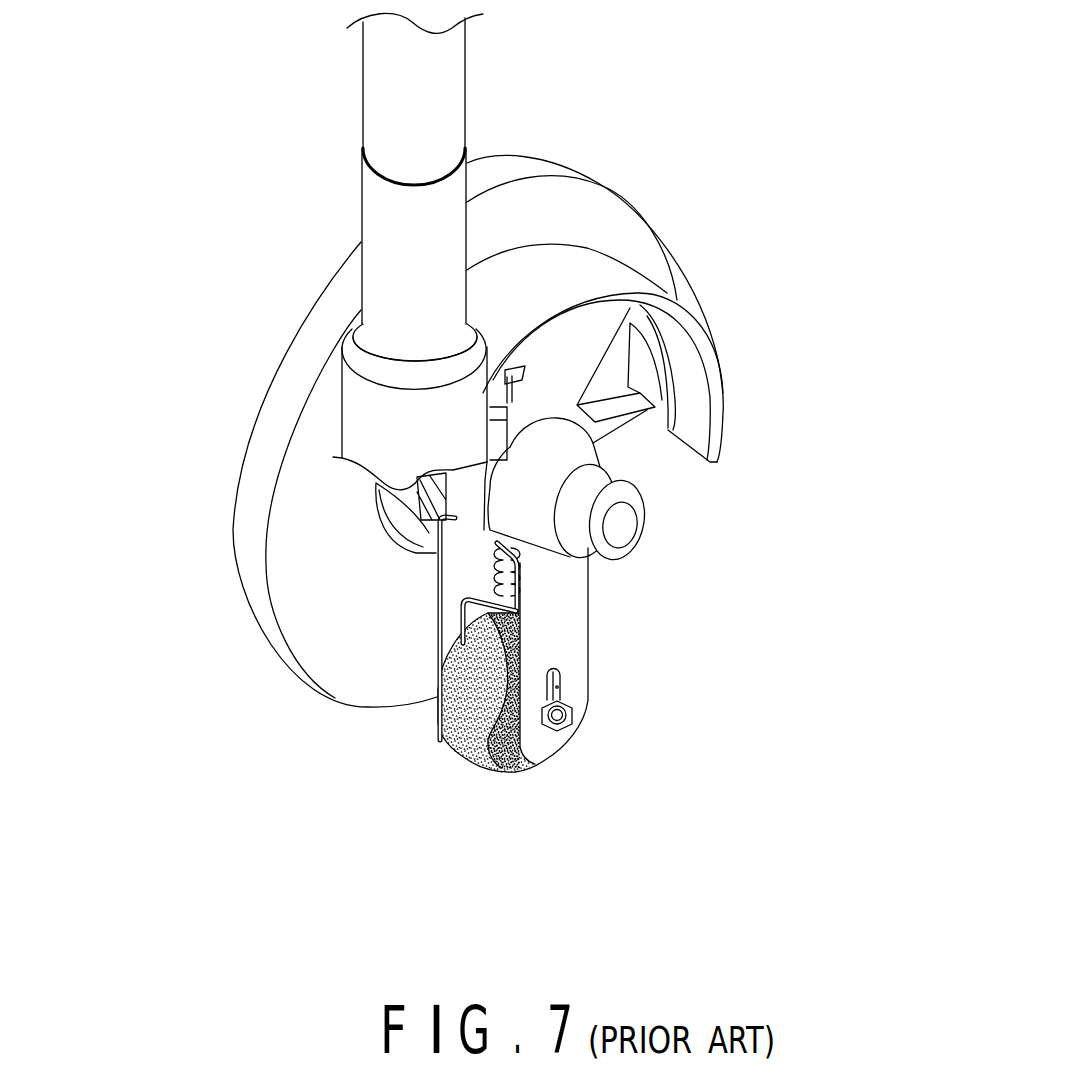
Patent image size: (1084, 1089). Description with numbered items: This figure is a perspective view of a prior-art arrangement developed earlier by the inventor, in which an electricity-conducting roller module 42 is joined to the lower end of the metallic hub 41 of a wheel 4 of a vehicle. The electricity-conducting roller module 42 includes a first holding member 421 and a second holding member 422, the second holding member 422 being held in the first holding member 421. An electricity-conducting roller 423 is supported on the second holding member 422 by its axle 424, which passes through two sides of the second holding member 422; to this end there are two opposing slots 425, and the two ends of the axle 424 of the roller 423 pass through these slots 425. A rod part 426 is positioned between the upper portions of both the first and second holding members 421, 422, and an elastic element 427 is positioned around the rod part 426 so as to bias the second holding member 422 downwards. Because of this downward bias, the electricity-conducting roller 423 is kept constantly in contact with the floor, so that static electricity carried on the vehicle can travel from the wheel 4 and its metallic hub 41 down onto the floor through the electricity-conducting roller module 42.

The wheel 4 is at (260, 352).
The metallic hub 41 is at (642, 433).
The electricity-conducting roller module 42 is at (430, 663).
The first holding member 421 is at (438, 553).
The second holding member 422 is at (460, 618).
The electricity-conducting roller 423 is at (468, 737).
The axle 424 is at (572, 720).
The slots 425 is at (560, 689).
The rod part 426 is at (507, 590).
The elastic element 427 is at (443, 590).